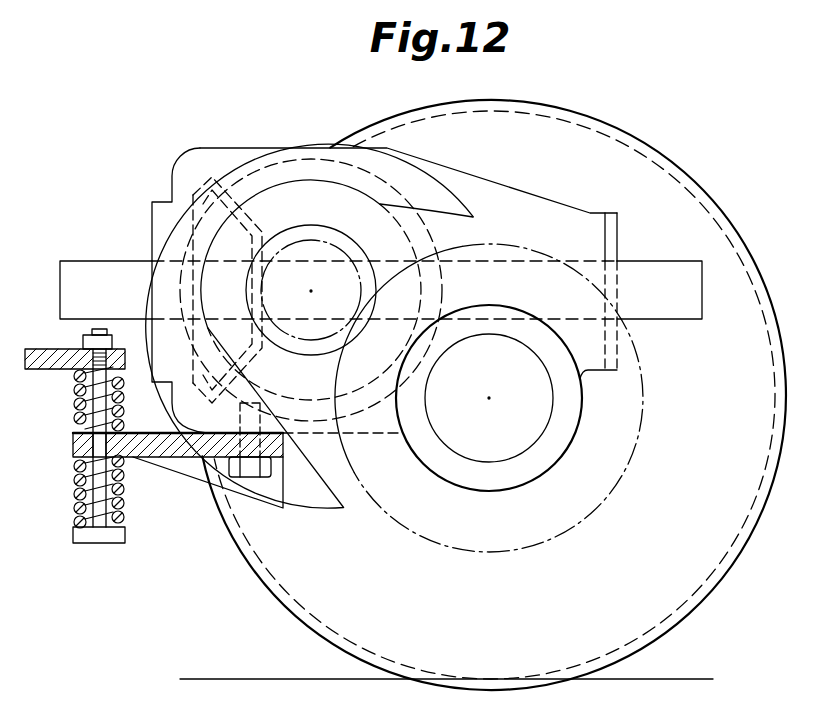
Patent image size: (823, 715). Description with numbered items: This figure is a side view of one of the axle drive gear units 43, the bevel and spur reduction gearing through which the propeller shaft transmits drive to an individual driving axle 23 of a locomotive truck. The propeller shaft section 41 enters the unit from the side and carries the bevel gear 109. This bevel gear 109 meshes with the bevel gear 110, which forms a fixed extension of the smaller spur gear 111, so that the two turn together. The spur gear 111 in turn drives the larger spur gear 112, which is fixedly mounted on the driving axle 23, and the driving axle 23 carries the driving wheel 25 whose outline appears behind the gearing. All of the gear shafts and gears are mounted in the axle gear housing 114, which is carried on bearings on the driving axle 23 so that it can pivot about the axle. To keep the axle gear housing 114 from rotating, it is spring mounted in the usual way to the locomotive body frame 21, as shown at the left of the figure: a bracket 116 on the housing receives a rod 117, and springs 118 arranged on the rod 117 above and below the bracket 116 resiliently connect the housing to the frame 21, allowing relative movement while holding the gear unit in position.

The bevel gear 109 is at (213, 183).
The bevel gear 110 is at (393, 228).
The spur gear 111 is at (315, 242).
The propeller shaft section 41 is at (647, 266).
The body frame 21 is at (42, 370).
The springs 118 is at (77, 472).
The rod 117 is at (97, 515).
The bracket 116 is at (200, 472).
The axle drive gear unit 43 is at (333, 484).
The driving axle 23 is at (540, 410).
The axle gear housing 114 is at (415, 552).
The spur gear 112 is at (563, 535).
The driving wheel 25 is at (718, 583).